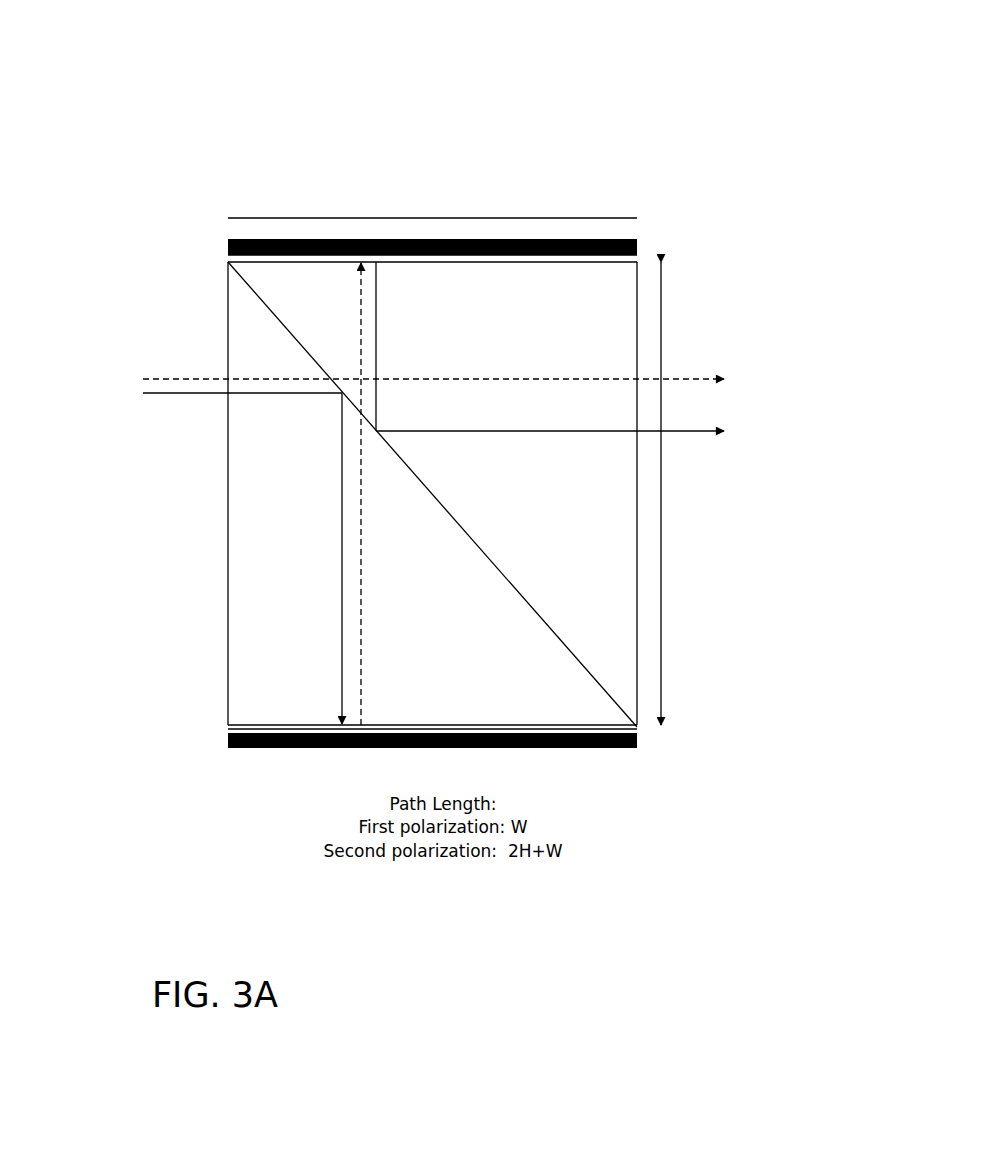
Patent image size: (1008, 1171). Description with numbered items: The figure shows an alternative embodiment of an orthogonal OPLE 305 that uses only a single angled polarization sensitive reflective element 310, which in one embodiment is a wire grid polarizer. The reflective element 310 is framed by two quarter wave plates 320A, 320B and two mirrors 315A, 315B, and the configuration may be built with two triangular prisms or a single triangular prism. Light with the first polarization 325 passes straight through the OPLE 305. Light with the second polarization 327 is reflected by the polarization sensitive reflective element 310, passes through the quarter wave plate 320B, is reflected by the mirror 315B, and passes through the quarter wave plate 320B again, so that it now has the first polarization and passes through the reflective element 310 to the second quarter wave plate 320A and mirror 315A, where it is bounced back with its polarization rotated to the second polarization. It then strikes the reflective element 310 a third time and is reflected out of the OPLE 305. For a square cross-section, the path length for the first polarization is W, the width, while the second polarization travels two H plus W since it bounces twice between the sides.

The orthogonal OPLE 305 is at (423, 231).
The polarization sensitive reflective element 310 is at (264, 298).
The mirror 315A is at (649, 244).
The mirror 315B is at (225, 746).
The quarter wave plate 320A is at (648, 261).
The quarter wave plate 320B is at (225, 726).
The light with the first polarization 325 is at (418, 330).
The light with the second polarization 327 is at (418, 493).